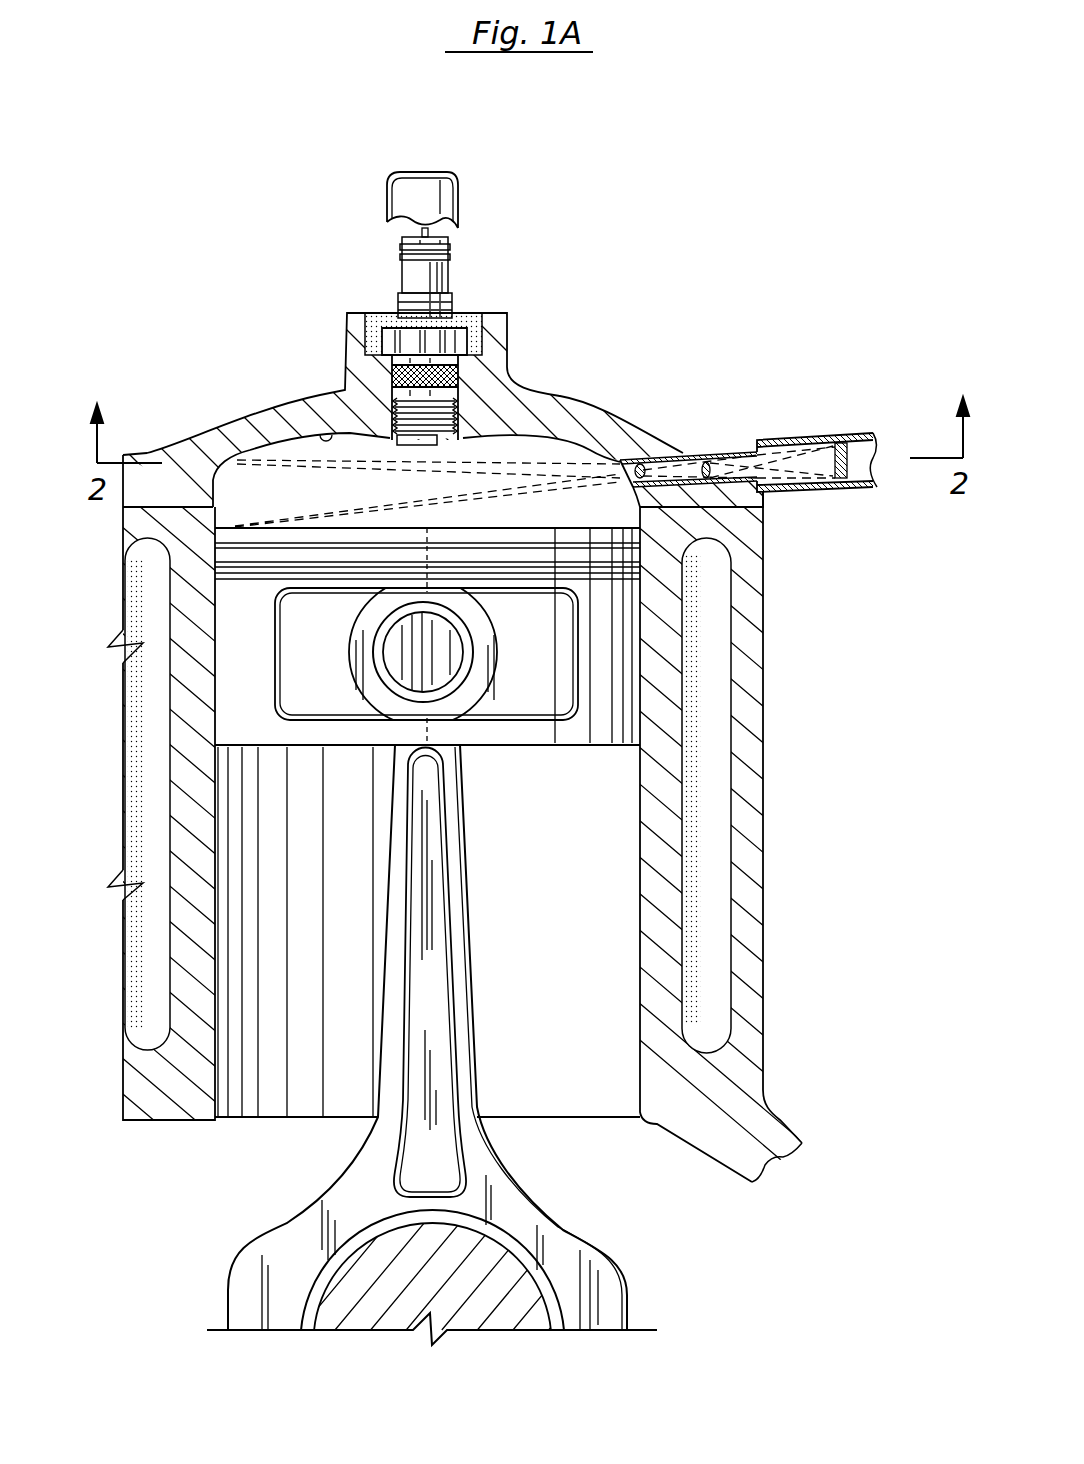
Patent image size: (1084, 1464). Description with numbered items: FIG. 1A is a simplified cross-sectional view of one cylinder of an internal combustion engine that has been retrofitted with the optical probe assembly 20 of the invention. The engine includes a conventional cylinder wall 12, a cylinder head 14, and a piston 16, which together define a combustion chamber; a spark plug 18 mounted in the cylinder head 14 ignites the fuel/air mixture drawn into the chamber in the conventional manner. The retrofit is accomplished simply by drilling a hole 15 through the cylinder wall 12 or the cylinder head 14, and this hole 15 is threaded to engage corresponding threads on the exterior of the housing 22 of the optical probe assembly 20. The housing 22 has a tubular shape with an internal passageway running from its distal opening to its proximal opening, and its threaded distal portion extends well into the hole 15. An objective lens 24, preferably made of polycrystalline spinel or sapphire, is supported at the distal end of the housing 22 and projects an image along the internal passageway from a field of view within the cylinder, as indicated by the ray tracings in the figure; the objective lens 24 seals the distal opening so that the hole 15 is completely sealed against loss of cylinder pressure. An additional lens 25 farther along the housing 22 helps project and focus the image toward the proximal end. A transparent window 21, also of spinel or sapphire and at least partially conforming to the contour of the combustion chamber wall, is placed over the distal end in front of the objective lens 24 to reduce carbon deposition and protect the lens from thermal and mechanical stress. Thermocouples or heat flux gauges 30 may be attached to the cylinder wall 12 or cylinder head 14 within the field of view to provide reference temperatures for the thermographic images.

The cylinder wall 12 is at (200, 587).
The cylinder head 14 is at (313, 405).
The hole 15 is at (638, 464).
The piston 16 is at (248, 693).
The spark plug 18 is at (445, 278).
The optical probe assembly 20 is at (591, 423).
The transparent window 21 is at (624, 455).
The housing 22 is at (793, 490).
The objective lens 24 is at (683, 450).
The additional lens 25 is at (842, 488).
The thermocouples or heat flux gauges 30 is at (212, 482).